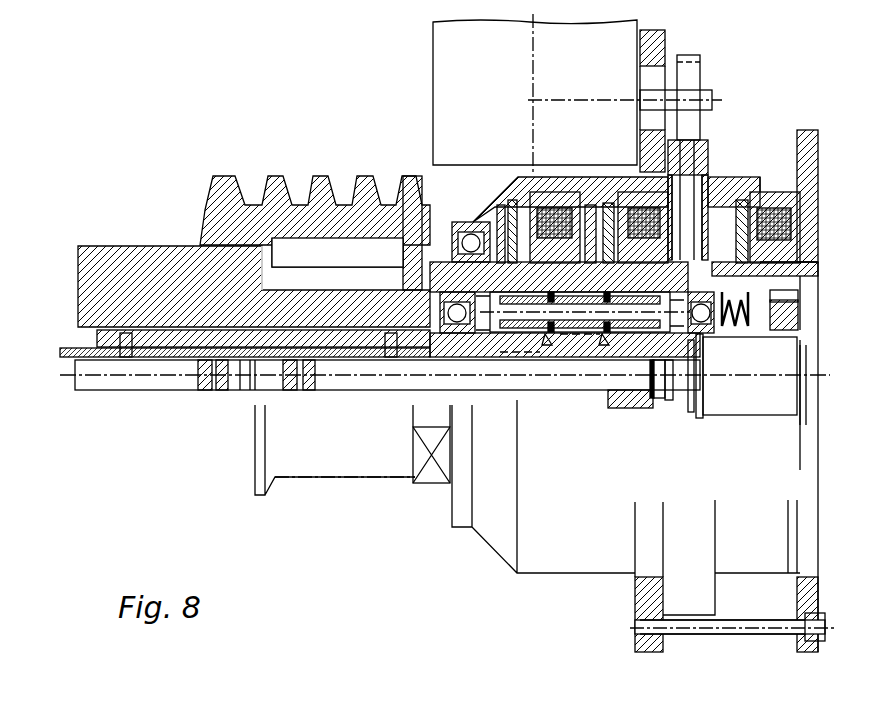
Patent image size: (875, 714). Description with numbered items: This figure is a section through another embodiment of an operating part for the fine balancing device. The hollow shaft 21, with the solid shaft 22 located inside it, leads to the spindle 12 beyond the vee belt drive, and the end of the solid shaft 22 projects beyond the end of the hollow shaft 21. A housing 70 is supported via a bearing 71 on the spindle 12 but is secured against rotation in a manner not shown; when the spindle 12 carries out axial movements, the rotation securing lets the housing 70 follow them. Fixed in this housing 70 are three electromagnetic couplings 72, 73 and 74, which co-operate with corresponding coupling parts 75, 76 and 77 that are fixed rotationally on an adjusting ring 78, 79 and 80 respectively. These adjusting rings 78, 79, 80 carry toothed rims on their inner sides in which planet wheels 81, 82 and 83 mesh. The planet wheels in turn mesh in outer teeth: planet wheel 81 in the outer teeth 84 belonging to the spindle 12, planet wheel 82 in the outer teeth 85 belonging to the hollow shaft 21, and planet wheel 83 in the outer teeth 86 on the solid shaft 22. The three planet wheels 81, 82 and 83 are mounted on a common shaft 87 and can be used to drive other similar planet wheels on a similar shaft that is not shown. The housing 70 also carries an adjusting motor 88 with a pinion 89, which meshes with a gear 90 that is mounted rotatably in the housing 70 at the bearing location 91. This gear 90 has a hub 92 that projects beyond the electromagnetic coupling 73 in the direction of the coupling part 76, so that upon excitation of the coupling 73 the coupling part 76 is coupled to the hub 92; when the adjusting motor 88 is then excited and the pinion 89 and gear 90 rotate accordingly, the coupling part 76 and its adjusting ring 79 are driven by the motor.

The spindle 12 is at (88, 265).
The hollow shaft 21 is at (78, 348).
The solid shaft 22 is at (84, 380).
The housing 70 is at (480, 222).
The bearing 71 is at (466, 240).
The electromagnetic coupling 72 is at (552, 222).
The electromagnetic coupling 73 is at (642, 222).
The electromagnetic coupling 74 is at (776, 222).
The coupling part 75 is at (502, 215).
The coupling part 76 is at (609, 218).
The coupling part 77 is at (744, 215).
The adjusting ring 78 is at (512, 208).
The adjusting ring 79 is at (591, 218).
The adjusting ring 80 is at (720, 285).
The planet wheel 81 is at (516, 335).
The planet wheel 82 is at (561, 338).
The planet wheel 83 is at (618, 338).
The outer teeth 84 is at (462, 340).
The outer teeth 85 is at (545, 348).
The outer teeth 86 is at (648, 398).
The common shaft 87 is at (583, 312).
The adjusting motor 88 is at (586, 80).
The pinion 89 is at (690, 76).
The gear 90 is at (686, 168).
The bearing location 91 is at (704, 295).
The hub 92 is at (654, 262).